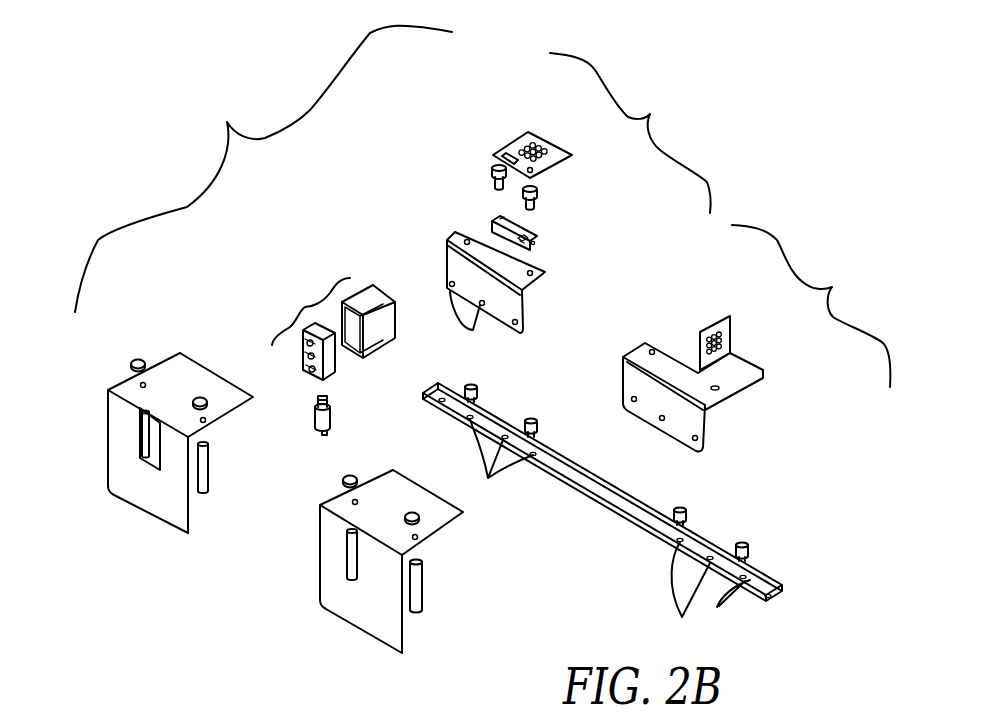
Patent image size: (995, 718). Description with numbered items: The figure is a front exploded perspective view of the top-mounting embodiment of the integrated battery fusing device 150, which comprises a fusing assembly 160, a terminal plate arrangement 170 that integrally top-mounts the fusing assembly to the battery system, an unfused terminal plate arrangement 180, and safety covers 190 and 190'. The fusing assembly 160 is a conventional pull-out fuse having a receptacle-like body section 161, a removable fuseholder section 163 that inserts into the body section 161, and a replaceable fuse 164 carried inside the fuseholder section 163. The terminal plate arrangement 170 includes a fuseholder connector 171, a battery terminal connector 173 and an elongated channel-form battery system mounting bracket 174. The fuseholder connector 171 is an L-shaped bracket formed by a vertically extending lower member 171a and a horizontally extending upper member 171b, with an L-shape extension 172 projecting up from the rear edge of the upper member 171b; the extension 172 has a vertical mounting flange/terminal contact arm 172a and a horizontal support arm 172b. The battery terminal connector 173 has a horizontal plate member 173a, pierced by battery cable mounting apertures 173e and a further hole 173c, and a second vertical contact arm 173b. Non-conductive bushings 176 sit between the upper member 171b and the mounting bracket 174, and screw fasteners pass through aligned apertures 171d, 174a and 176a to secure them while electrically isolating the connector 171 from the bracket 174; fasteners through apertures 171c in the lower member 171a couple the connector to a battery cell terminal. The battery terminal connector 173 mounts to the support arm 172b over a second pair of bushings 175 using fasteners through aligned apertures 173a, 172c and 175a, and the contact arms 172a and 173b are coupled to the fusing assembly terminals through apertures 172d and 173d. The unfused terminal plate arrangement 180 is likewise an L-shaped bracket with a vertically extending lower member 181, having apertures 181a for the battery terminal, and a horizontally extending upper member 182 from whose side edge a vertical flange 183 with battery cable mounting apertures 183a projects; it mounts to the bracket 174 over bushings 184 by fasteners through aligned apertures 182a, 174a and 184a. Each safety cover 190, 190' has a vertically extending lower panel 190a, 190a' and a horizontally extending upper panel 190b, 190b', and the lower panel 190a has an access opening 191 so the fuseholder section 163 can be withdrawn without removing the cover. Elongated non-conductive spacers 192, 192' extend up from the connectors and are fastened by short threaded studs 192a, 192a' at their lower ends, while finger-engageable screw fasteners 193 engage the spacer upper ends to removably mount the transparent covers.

The integrated battery fusing device 150 is at (263, 169).
The fusing assembly 160 is at (307, 311).
The receptacle-like body section 161 is at (382, 347).
The fuseholder section 163 is at (328, 362).
The replaceable fuse 164 is at (330, 417).
The terminal plate arrangement 170 is at (630, 133).
The fuseholder connector 171 is at (455, 265).
The vertically extending lower member 171a is at (525, 315).
The horizontally extending upper member 171b is at (533, 290).
The apertures 171c is at (483, 326).
The apertures 171d is at (467, 240).
The L-shape extension 172 is at (485, 224).
The vertical mounting flange/terminal contact arm 172a is at (527, 252).
The horizontal support arm 172b is at (525, 230).
The apertures 172c is at (537, 242).
The apertures 172d is at (493, 233).
The battery terminal connector 173 is at (540, 133).
The horizontal plate member 173a is at (528, 135).
The second vertical mounting flange/terminal contact arm 173b is at (512, 157).
The plate hole 173c is at (536, 170).
The apertures 173d is at (500, 148).
The battery cable mounting apertures 173e is at (548, 152).
The battery system mounting bracket 174 is at (598, 497).
The apertures 174a is at (610, 527).
The electrically non-conductive bushings 175 is at (540, 195).
The apertures 175a is at (492, 178).
The electrically non-conductive bushings 176 is at (476, 386).
The apertures 176a is at (532, 421).
The unfused terminal plate arrangement 180 is at (811, 306).
The vertically extending lower member 181 is at (688, 412).
The apertures 181a is at (662, 421).
The horizontally extending upper member 182 is at (747, 372).
The apertures 182a is at (720, 388).
The vertical flange 183 is at (733, 332).
The battery cable mounting apertures 183a is at (730, 348).
The electrically non-conductive bushings 184 is at (683, 510).
The apertures 184a is at (742, 543).
The safety cover 190 is at (160, 455).
The vertically extending lower panel 190a is at (224, 532).
The horizontally extending upper panel 190b is at (267, 421).
The safety cover 190' is at (365, 571).
The vertically extending lower panel 190a' is at (425, 661).
The horizontally extending upper panel 190b' is at (477, 551).
The access opening 191 is at (150, 463).
The electrically non-conductive spacers 192 is at (202, 485).
The short threaded stud 192a is at (241, 515).
The standoff post 192' is at (452, 595).
The standoff post end 192a' is at (461, 636).
The finger engageable screw type fasteners 193 is at (193, 397).